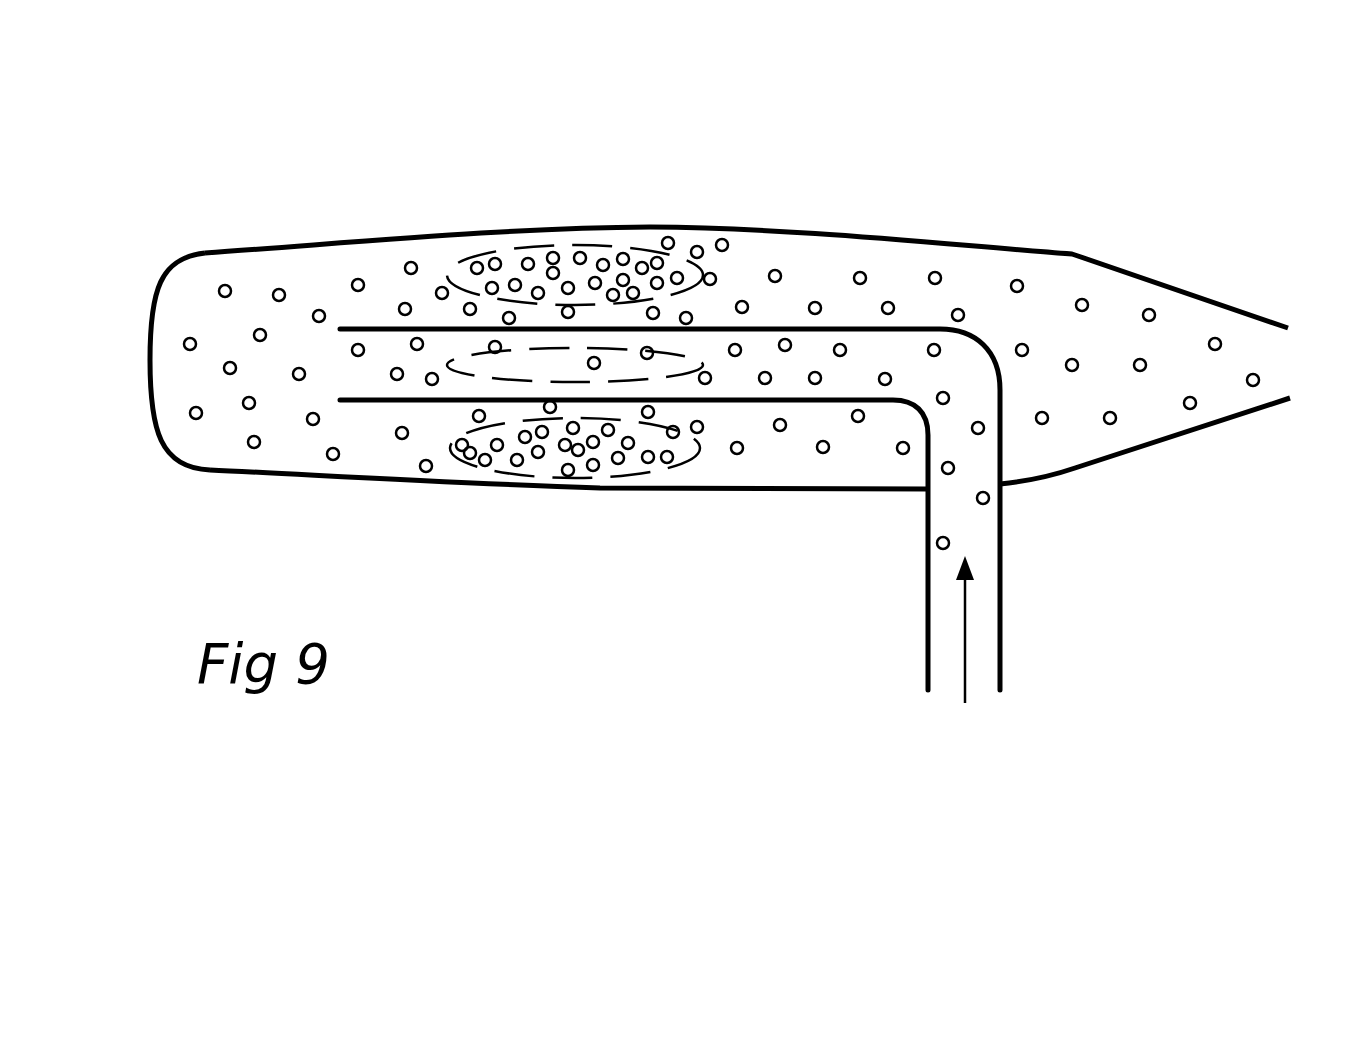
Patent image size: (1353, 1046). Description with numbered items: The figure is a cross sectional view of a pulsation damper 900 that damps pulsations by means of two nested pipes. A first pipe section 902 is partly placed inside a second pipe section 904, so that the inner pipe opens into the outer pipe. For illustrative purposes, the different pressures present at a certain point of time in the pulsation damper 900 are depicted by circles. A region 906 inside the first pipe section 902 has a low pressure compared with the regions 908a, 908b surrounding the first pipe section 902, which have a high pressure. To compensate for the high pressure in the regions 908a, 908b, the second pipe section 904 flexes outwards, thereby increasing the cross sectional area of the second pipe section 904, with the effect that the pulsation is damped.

The pulsation damper 900 is at (922, 155).
The first pipe section 902 is at (925, 528).
The second pipe section 904 is at (280, 256).
The region 906 is at (667, 352).
The region 908a is at (520, 272).
The region 908b is at (518, 453).